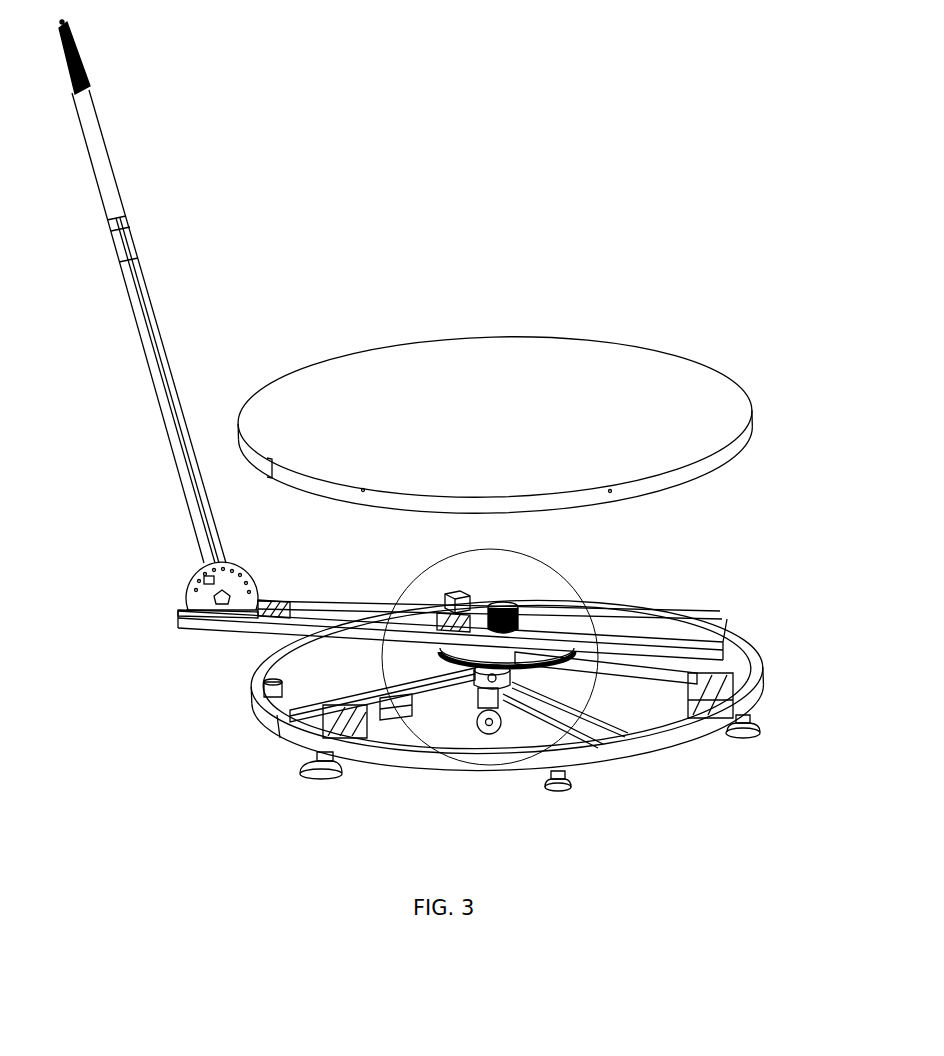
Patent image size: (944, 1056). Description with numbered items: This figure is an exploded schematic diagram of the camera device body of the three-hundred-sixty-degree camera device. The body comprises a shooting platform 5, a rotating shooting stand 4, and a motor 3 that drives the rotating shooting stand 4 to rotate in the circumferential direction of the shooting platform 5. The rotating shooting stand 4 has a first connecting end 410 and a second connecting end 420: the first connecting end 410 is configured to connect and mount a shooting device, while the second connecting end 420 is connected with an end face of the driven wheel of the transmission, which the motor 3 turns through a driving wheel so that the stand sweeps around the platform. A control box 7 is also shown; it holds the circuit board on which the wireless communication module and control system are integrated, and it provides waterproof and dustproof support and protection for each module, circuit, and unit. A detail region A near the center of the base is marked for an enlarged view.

The motor 3 is at (503, 727).
The rotating shooting stand 4 is at (178, 505).
The shooting platform 5 is at (697, 365).
The control box 7 is at (402, 712).
The first connecting end 410 is at (90, 88).
The second connecting end 420 is at (648, 605).
The detail area A is at (578, 595).